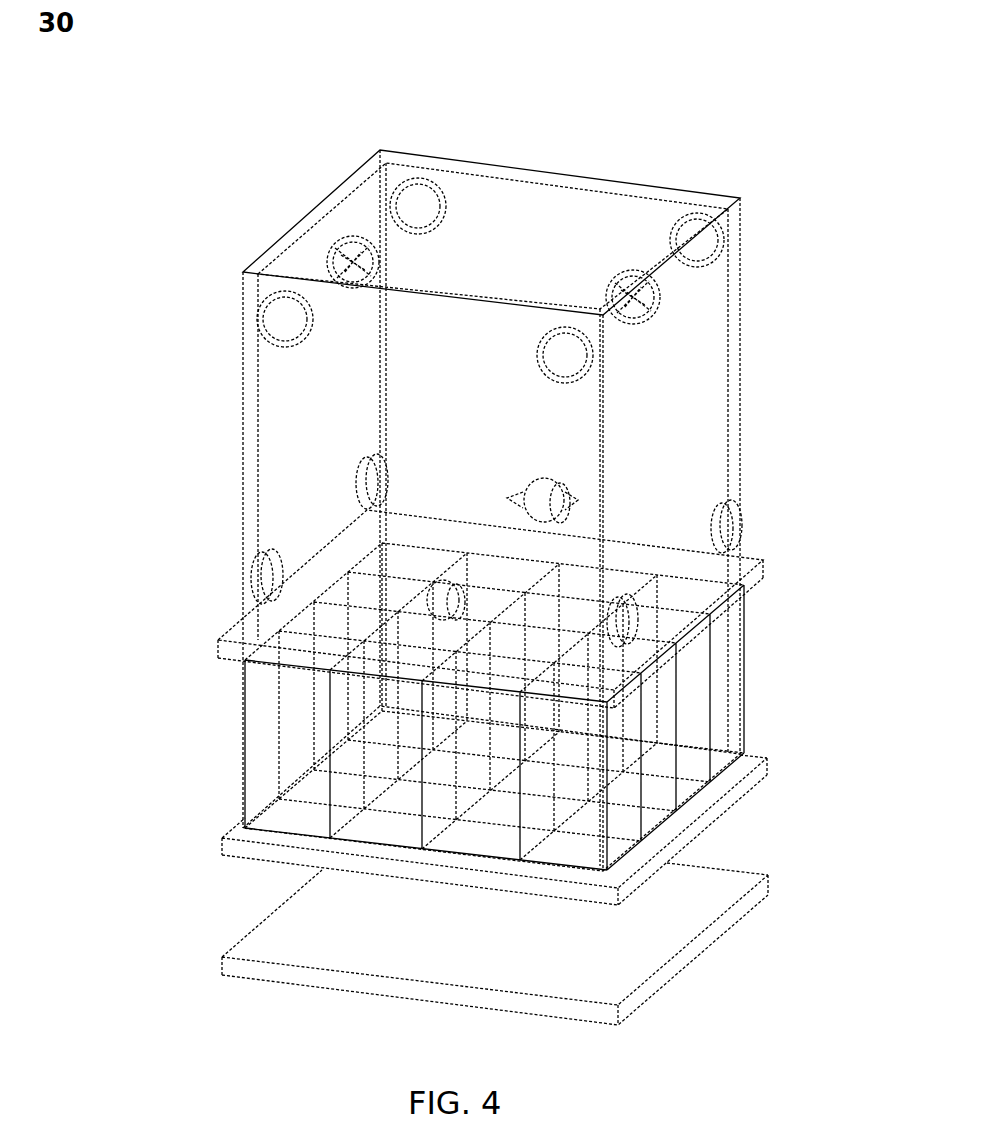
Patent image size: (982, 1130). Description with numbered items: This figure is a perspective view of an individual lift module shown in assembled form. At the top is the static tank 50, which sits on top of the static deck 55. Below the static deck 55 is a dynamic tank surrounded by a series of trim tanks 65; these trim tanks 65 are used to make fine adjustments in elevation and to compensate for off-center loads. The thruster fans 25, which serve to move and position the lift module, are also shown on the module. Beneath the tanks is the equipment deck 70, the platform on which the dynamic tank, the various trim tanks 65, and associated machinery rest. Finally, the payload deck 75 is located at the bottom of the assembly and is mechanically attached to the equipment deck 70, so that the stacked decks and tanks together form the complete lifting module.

The thruster fans 25 is at (612, 262).
The static tank 50 is at (668, 430).
The static deck 55 is at (723, 602).
The trim tanks 65 is at (290, 720).
The equipment deck 70 is at (727, 805).
The payload deck 75 is at (683, 957).